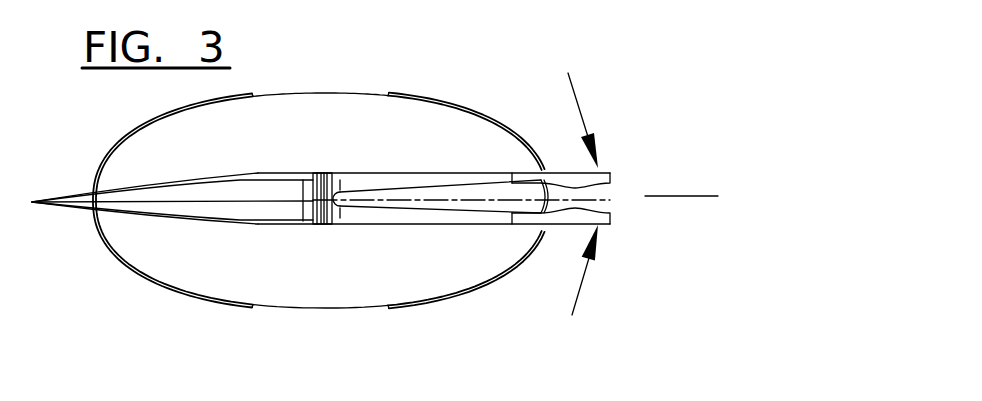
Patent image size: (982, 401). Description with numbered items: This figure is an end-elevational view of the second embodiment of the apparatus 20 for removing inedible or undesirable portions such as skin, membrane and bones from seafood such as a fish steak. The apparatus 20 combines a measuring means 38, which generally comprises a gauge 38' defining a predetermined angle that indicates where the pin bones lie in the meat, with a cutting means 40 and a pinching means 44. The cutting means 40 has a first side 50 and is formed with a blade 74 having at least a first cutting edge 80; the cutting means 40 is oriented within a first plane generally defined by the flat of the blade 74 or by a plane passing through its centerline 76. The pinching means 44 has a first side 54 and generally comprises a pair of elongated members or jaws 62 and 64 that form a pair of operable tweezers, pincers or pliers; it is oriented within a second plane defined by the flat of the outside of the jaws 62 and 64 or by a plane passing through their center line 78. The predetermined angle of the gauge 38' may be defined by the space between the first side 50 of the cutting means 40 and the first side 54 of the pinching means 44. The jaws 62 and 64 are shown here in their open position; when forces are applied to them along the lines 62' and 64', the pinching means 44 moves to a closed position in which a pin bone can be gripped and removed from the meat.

The apparatus 20 is at (176, 316).
The measuring means 38 is at (434, 301).
The gauge 38' is at (269, 229).
The cutting means 40 is at (112, 215).
The pinching means 44 is at (472, 181).
The first side 50 is at (233, 193).
The first side 54 is at (403, 181).
The jaw 62 is at (561, 145).
The force line 62' is at (616, 120).
The jaw 64 is at (561, 250).
The force line 64' is at (618, 275).
The blade 74 is at (178, 202).
The centerline 76 is at (280, 198).
The center line 78 is at (500, 172).
The first cutting edge 80 is at (150, 203).